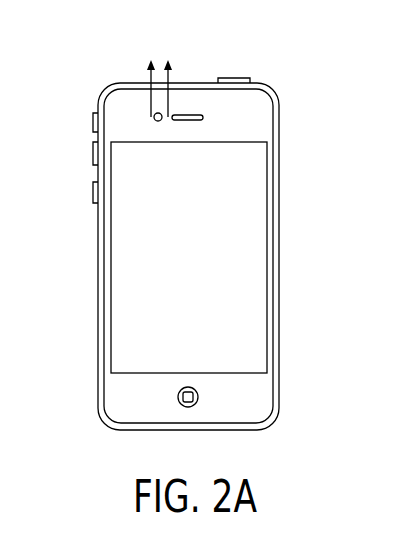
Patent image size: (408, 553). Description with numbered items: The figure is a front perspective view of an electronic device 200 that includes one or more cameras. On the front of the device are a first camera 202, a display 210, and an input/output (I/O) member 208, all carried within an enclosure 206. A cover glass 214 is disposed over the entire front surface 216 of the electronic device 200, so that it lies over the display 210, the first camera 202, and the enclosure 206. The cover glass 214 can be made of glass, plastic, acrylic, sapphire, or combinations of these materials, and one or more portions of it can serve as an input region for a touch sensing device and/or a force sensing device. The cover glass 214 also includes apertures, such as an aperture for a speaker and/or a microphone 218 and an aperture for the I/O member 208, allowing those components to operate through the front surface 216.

The electronic device 200 is at (198, 250).
The first camera 202 is at (157, 113).
The enclosure 206 is at (255, 87).
The input/output (I/O) member 208 is at (187, 407).
The display 210 is at (262, 173).
The cover glass 214 is at (115, 383).
The front surface 216 is at (120, 124).
The speaker and/or microphone 218 is at (183, 117).